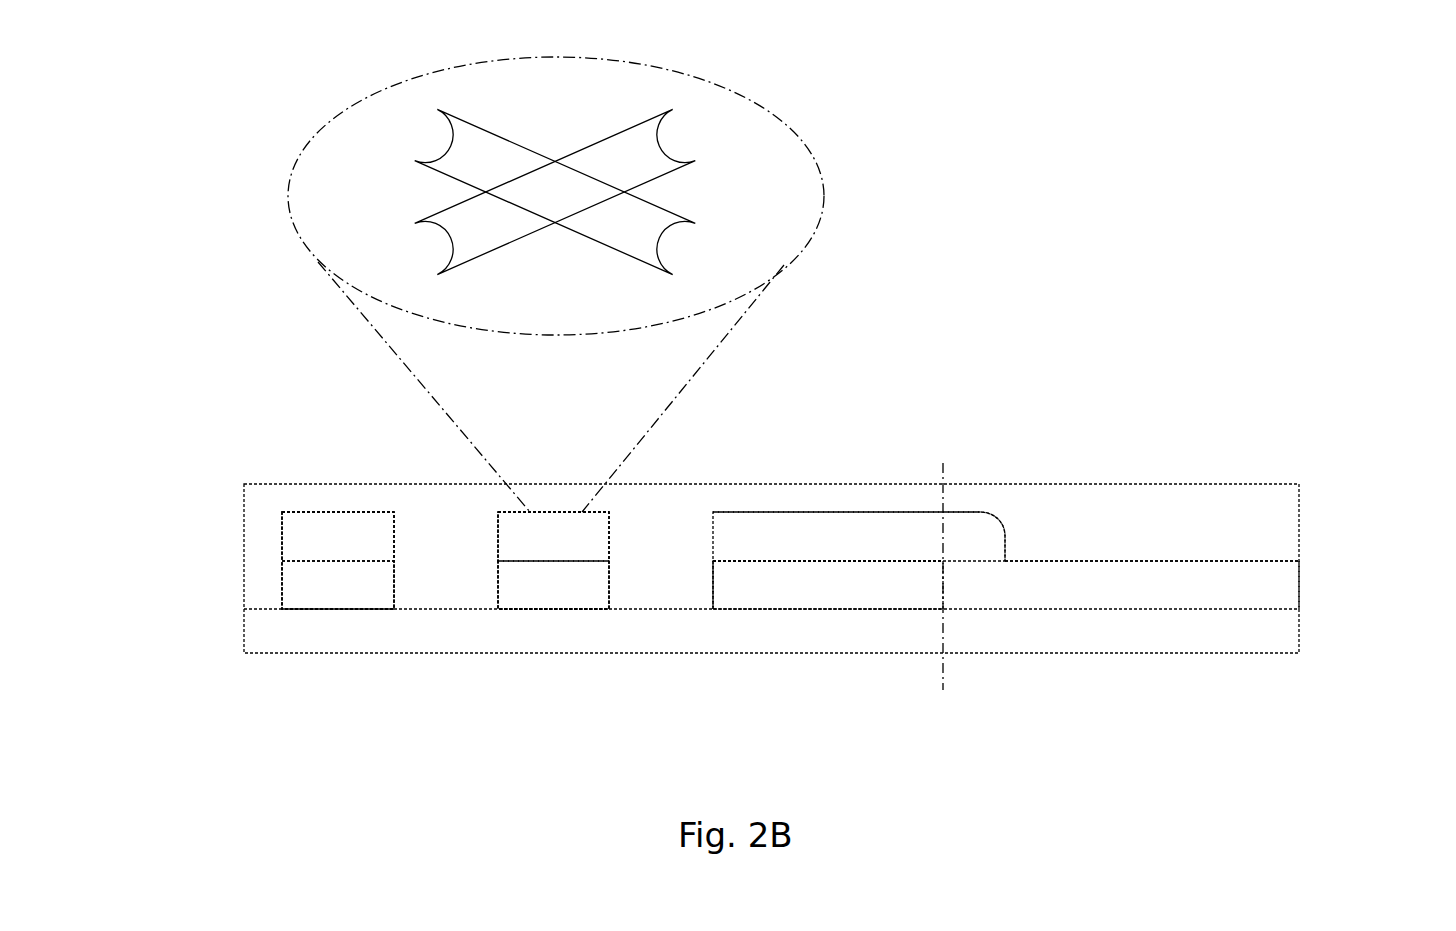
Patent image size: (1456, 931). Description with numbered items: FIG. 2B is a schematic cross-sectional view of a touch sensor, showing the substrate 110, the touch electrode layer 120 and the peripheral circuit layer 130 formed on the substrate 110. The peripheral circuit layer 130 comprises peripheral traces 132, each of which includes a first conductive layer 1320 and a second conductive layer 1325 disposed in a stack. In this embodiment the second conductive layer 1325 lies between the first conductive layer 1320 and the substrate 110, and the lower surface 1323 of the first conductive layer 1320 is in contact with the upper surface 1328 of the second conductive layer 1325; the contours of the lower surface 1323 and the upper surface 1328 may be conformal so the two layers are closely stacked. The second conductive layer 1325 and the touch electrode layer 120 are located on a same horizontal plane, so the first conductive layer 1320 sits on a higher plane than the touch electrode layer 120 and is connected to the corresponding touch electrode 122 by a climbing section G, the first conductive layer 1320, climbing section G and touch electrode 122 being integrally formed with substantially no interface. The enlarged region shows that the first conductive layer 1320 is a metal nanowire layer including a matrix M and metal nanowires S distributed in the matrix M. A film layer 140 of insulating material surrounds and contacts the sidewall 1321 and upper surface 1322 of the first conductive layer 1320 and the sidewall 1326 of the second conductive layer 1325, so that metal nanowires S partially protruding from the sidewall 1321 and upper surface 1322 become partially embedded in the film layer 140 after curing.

The substrate 110 is at (1292, 638).
The touch electrode layer 120 is at (1292, 585).
The touch electrode 122 is at (1152, 585).
The film layer 140 is at (1292, 525).
The peripheral circuit layer 130 is at (337, 560).
The peripheral trace 132 is at (157, 588).
The first conductive layer 1320 is at (288, 538).
The second conductive layer 1325 is at (288, 576).
The sidewall of the first conductive layer 1321 is at (709, 527).
The upper surface of the first conductive layer 1322 is at (810, 512).
The lower surface of the first conductive layer 1323 is at (843, 561).
The sidewall of the second conductive layer 1326 is at (709, 584).
The upper surface of the second conductive layer 1328 is at (886, 561).
The climbing section G is at (982, 527).
The matrix M is at (770, 125).
The metal nanowires S is at (698, 114).